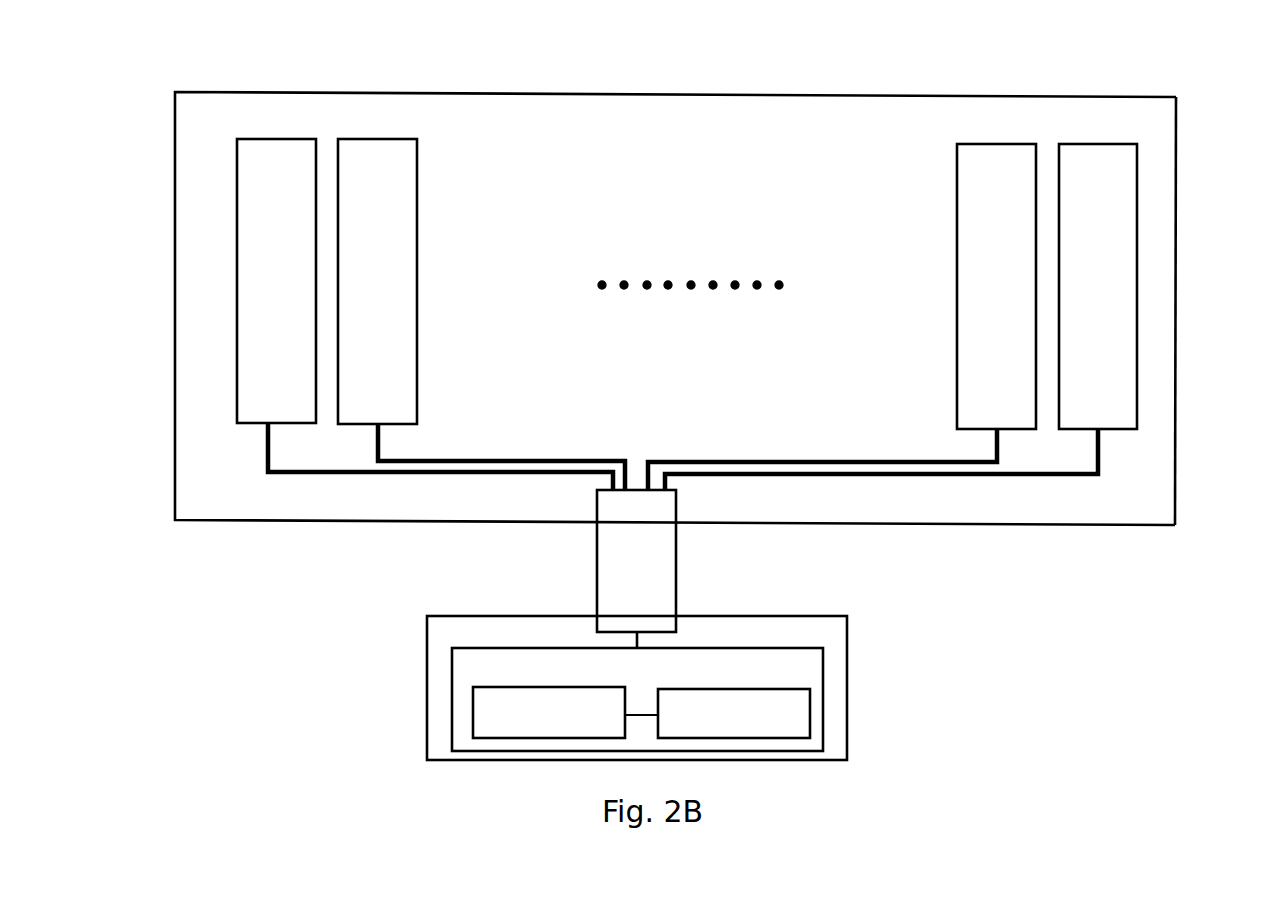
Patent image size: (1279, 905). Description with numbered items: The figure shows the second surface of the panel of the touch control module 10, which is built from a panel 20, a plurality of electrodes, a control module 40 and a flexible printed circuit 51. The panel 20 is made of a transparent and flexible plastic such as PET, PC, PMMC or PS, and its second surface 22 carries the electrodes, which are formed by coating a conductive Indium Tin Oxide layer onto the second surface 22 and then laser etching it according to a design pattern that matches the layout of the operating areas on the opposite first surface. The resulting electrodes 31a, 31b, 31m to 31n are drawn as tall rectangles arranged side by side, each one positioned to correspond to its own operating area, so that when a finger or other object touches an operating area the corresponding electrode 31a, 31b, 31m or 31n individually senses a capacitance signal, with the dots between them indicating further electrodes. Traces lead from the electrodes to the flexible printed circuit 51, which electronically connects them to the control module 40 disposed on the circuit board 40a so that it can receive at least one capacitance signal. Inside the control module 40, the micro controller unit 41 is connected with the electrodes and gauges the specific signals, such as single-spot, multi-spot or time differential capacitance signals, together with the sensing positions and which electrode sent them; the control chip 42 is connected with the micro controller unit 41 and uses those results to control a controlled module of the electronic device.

The control module 10 is at (1185, 84).
The panel 20 is at (215, 90).
The second surface 22 is at (1160, 238).
The electrode 31a is at (300, 143).
The electrode 31b is at (405, 180).
The electrode 31m is at (965, 192).
The electrode 31n is at (1091, 148).
The flexible printed circuit 51 is at (607, 563).
The circuit board 40a is at (427, 623).
The control module 40 is at (637, 699).
The micro controller unit 41 is at (549, 712).
The control chip 42 is at (717, 713).